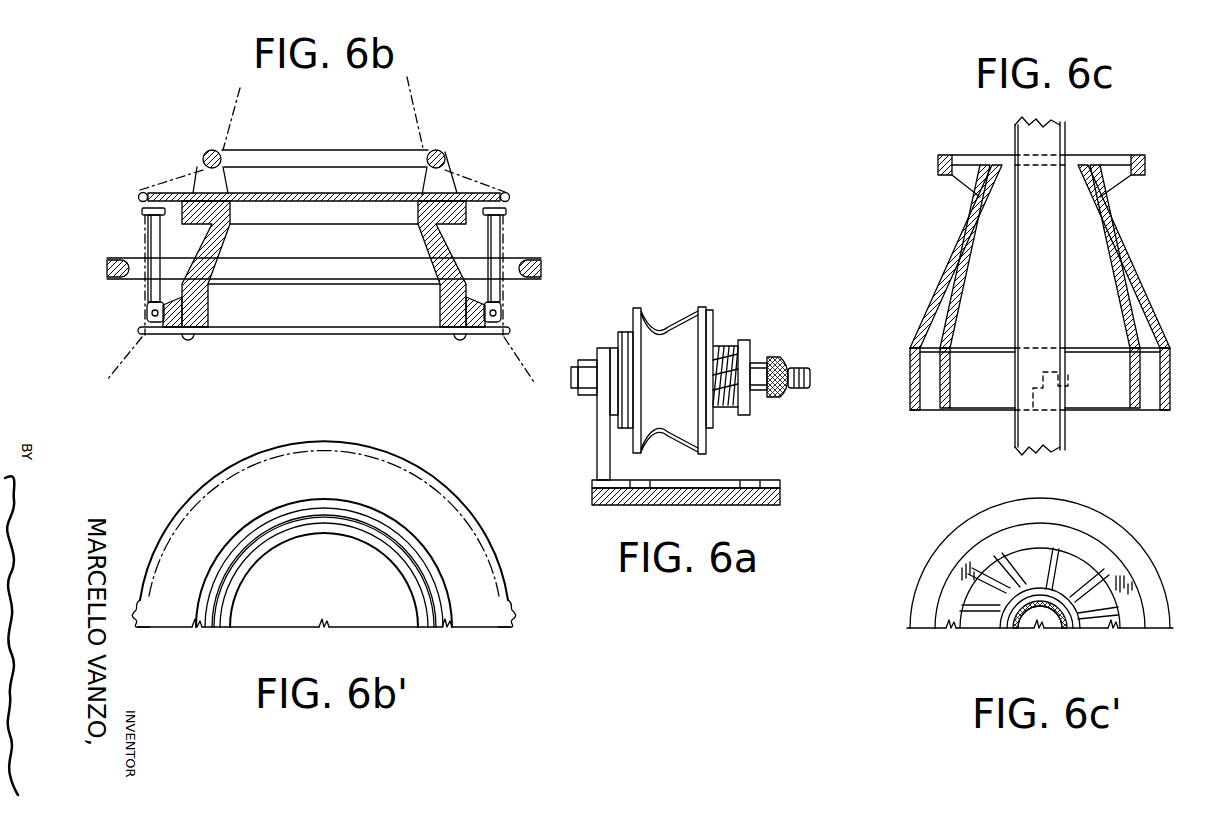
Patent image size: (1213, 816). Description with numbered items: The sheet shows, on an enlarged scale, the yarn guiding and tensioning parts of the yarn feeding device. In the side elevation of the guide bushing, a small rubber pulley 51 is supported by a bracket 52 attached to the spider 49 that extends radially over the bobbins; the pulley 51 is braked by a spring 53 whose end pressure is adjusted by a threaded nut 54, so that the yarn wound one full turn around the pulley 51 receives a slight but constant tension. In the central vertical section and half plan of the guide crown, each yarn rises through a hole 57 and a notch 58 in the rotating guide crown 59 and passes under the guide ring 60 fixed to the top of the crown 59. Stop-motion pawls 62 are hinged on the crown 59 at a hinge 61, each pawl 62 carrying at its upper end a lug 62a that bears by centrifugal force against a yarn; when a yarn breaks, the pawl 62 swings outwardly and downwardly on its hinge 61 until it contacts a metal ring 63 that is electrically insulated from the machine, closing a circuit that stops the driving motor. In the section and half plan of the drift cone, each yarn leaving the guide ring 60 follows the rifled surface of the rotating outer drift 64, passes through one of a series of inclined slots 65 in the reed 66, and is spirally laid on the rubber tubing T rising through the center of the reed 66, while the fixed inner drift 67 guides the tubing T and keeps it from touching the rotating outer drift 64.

In FIG. 6a, the spider 49 is at (620, 497).
In FIG. 6a, the rubber pulley 51 is at (668, 335).
In FIG. 6a, the bracket 52 is at (604, 358).
In FIG. 6a, the spring 53 is at (722, 352).
In FIG. 6a, the threaded nut 54 is at (777, 360).
In FIG. 6b, the hole 57 is at (158, 335).
In FIG. 6b, the notch 58 is at (140, 193).
In FIG. 6b', the notch 58 is at (148, 607).
In FIG. 6b, the guide crown 59 is at (457, 205).
In FIG. 6b', the guide crown 59 is at (480, 615).
In FIG. 6b, the guide ring 60 is at (207, 152).
In FIG. 6b', the guide ring 60 is at (395, 542).
In FIG. 6b, the hinge 61 is at (150, 313).
In FIG. 6b, the stop-motion pawl 62 is at (152, 237).
In FIG. 6b, the lug 62a is at (144, 211).
In FIG. 6b, the metal ring 63 is at (108, 268).
In FIG. 6c, the outer drift 64 is at (1143, 282).
In FIG. 6c', the outer drift 64 is at (912, 611).
In FIG. 6c, the slot 65 is at (972, 170).
In FIG. 6c', the slot 65 is at (1100, 590).
In FIG. 6c, the reed 66 is at (1137, 158).
In FIG. 6c', the reed 66 is at (960, 586).
In FIG. 6c, the inner drift 67 is at (968, 265).
In FIG. 6c', the inner drift 67 is at (1067, 633).
In FIG. 6c, the rubber tubing T is at (1013, 441).
In FIG. 6c', the rubber tubing T is at (1036, 624).